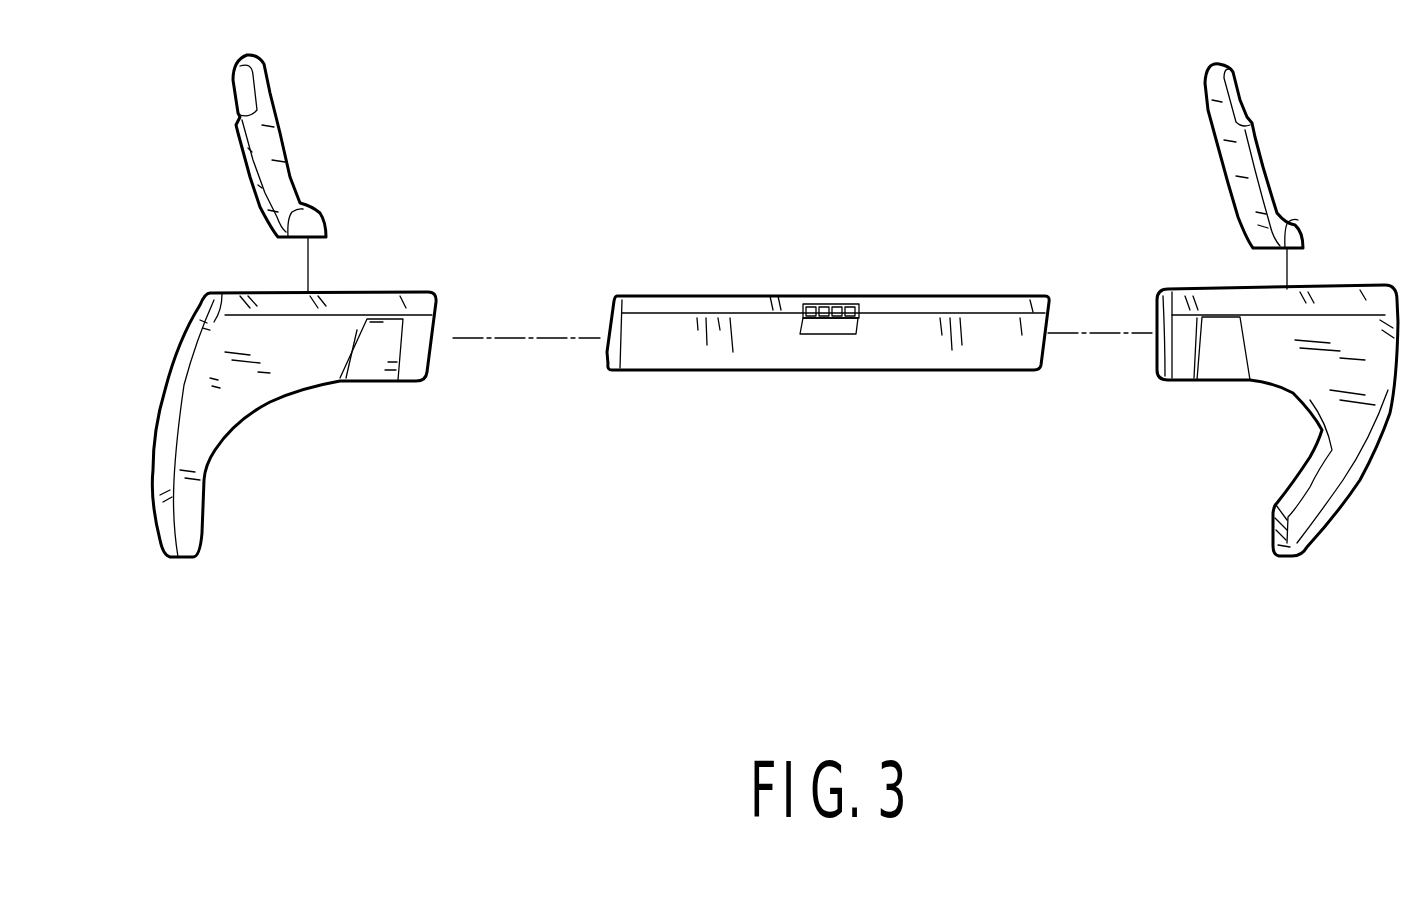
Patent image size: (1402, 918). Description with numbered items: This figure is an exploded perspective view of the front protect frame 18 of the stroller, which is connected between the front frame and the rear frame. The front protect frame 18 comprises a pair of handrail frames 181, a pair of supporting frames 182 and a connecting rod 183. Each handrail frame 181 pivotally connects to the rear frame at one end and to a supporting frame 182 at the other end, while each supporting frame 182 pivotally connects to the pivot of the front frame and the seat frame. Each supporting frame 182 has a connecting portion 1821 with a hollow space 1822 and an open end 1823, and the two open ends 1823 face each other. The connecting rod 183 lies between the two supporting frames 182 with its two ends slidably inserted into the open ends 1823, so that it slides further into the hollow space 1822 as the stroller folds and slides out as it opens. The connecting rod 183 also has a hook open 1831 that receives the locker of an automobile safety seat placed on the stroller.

The front protect frame 18 is at (775, 424).
The handrail frame 181 is at (283, 145).
The supporting frame 182 is at (775, 413).
The connecting portion 1821 is at (1222, 302).
The hollow space 1822 is at (1150, 352).
The open end 1823 is at (1158, 375).
The connecting rod 183 is at (802, 407).
The hook open 1831 is at (835, 330).